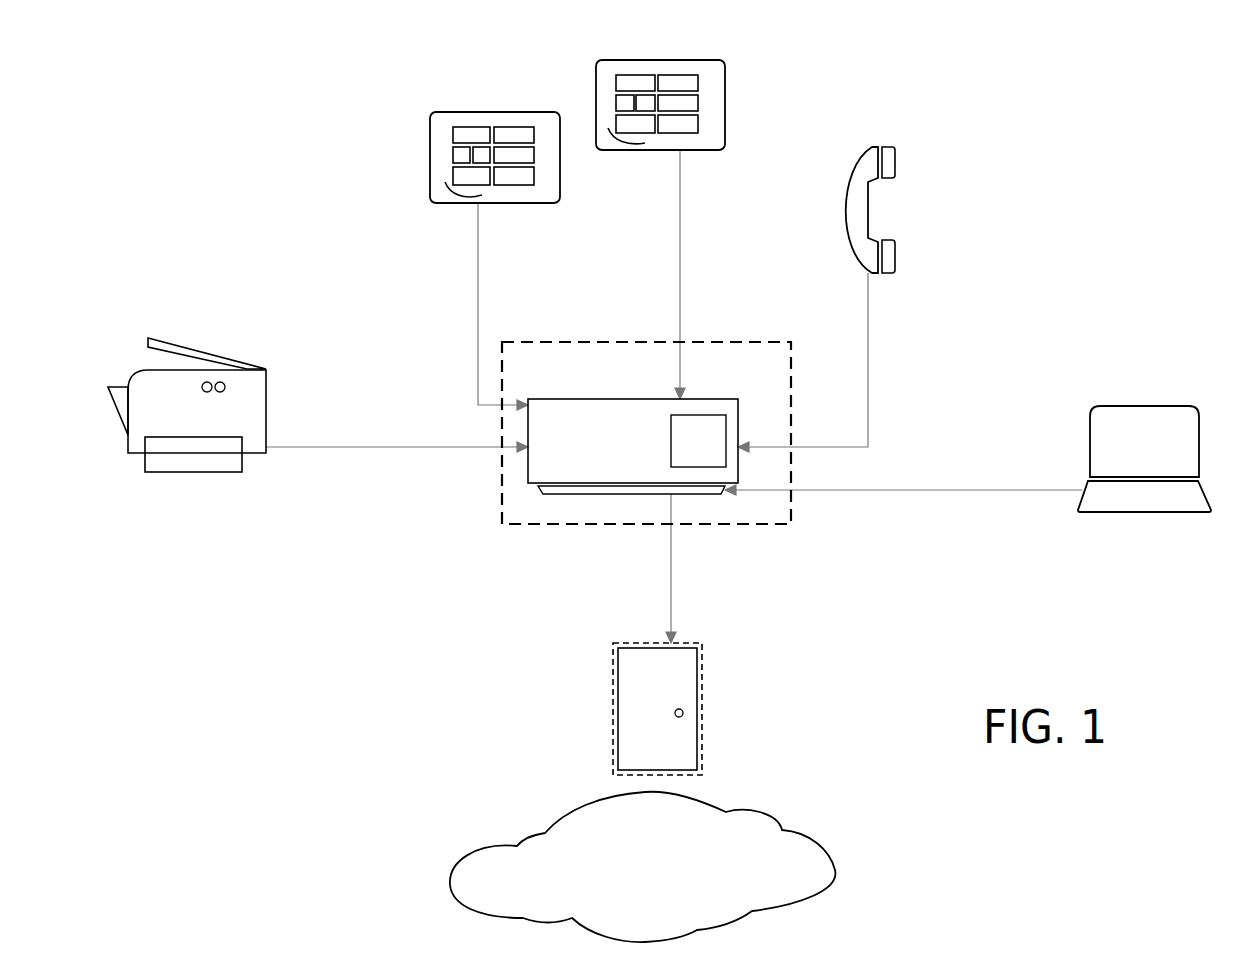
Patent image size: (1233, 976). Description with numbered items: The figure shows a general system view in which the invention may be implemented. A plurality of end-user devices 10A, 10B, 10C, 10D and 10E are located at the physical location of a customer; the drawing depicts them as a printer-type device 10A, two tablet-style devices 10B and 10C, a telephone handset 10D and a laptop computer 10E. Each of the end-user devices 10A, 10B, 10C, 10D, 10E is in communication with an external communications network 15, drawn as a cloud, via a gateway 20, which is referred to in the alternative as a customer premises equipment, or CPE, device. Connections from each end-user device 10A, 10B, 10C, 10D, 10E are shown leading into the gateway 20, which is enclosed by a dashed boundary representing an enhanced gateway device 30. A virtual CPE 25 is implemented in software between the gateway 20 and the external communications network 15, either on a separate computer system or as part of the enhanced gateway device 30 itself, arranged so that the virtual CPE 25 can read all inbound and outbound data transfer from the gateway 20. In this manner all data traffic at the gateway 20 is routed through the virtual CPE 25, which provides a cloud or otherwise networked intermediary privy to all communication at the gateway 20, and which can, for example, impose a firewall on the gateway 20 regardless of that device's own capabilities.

The end-user device 10A is at (139, 371).
The end-user device 10B is at (432, 112).
The end-user device 10C is at (729, 88).
The end-user device 10D is at (873, 146).
The laptop computer device 10E is at (1130, 405).
The enhanced gateway device 30 is at (646, 433).
The gateway 20 is at (633, 446).
The virtual CPE 25 is at (657, 709).
The external communications network 15 is at (643, 867).